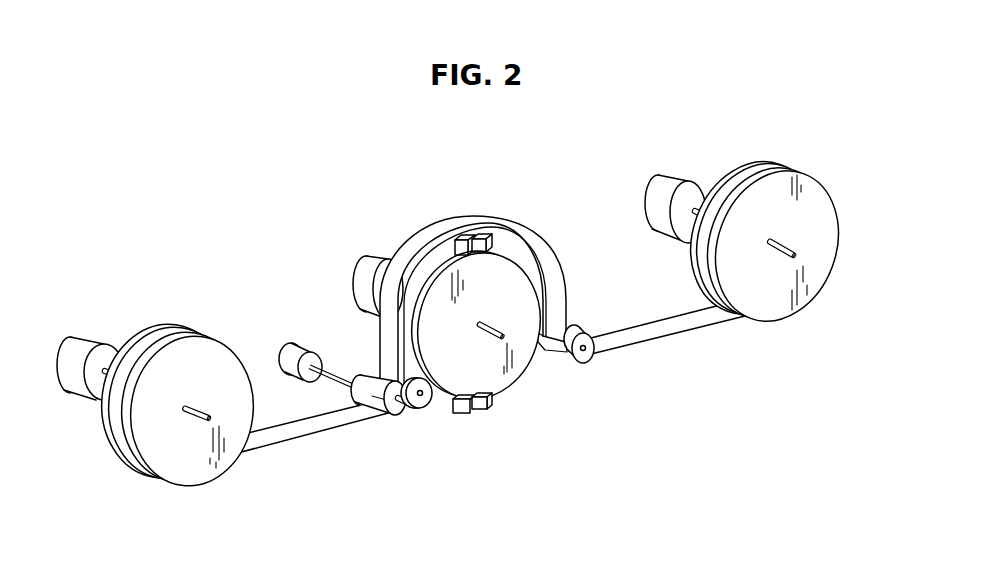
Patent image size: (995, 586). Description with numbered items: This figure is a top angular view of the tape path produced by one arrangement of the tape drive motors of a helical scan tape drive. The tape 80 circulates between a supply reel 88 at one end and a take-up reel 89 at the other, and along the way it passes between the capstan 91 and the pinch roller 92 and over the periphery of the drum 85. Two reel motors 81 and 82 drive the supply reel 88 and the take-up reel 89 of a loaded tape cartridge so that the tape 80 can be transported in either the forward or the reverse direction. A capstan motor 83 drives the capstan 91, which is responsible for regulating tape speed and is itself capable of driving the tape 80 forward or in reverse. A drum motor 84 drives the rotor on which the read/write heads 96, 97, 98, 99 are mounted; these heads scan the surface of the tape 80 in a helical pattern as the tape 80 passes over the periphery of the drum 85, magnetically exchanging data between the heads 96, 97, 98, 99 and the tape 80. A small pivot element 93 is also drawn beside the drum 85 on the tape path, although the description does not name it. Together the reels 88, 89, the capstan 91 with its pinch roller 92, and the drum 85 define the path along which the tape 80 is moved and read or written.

The tape 80 is at (300, 437).
The reel motor 81 is at (72, 338).
The reel motor 82 is at (658, 190).
The capstan motor 83 is at (295, 345).
The drum motor 84 is at (363, 273).
The drum 85 is at (528, 363).
The supply reel 88 is at (178, 487).
The take-up reel 89 is at (837, 217).
The capstan 91 is at (398, 415).
The pinch roller 92 is at (418, 410).
The pivot 93 is at (577, 323).
The read/write head 96 is at (462, 242).
The read/write head 97 is at (493, 239).
The read/write head 98 is at (467, 410).
The read/write head 99 is at (490, 400).